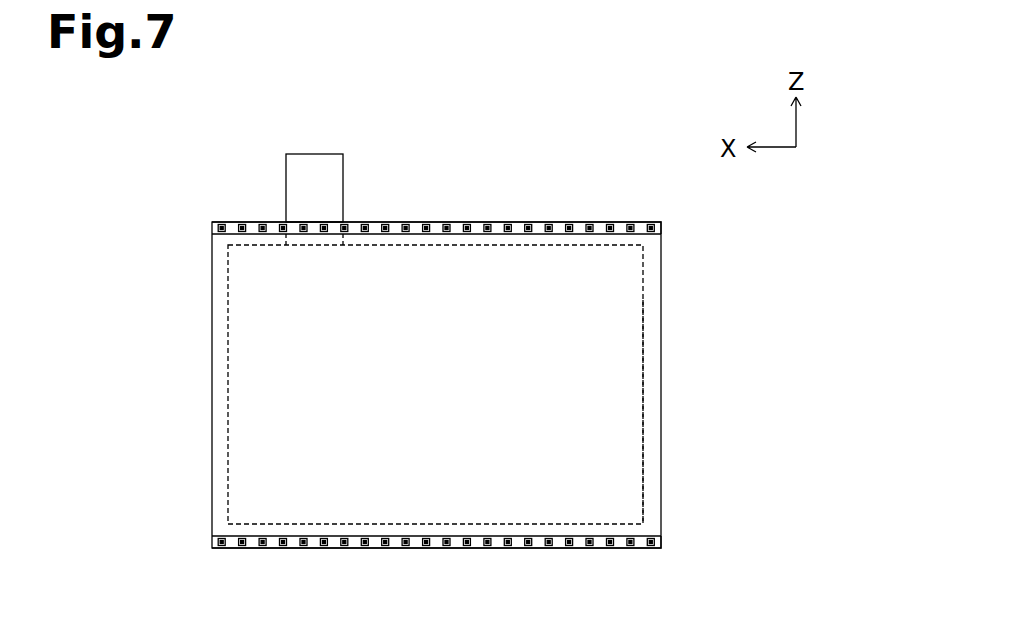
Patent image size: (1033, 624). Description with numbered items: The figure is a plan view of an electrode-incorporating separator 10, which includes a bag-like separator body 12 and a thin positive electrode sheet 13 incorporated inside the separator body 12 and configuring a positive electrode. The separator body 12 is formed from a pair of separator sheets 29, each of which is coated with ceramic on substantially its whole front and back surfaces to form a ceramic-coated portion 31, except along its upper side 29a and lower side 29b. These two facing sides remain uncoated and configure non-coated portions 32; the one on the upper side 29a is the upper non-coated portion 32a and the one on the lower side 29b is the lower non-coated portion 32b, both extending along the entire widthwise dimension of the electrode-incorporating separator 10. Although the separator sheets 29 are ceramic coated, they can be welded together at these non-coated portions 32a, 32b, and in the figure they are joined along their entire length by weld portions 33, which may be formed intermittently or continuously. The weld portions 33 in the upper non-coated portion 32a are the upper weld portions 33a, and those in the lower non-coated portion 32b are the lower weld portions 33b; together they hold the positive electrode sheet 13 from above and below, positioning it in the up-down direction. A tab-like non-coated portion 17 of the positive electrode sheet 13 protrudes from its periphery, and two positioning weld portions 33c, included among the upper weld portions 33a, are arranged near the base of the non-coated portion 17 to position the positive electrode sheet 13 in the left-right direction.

The electrode-incorporating separator 10 is at (176, 130).
The separator body 12 is at (656, 268).
The positive electrode sheet 13 is at (644, 314).
The non-coated portion 17 is at (344, 162).
The separator sheet 29 is at (656, 389).
The upper side 29a is at (642, 221).
The lower side 29b is at (643, 550).
The ceramic-coated portion 31 is at (634, 452).
The non-coated portion 32 is at (436, 374).
The upper non-coated portion 32a is at (432, 224).
The lower non-coated portion 32b is at (497, 546).
The weld portion 33 is at (417, 386).
The upper weld portion 33a is at (488, 224).
The lower weld portion 33b is at (324, 546).
The positioning weld portion 33c is at (283, 224).